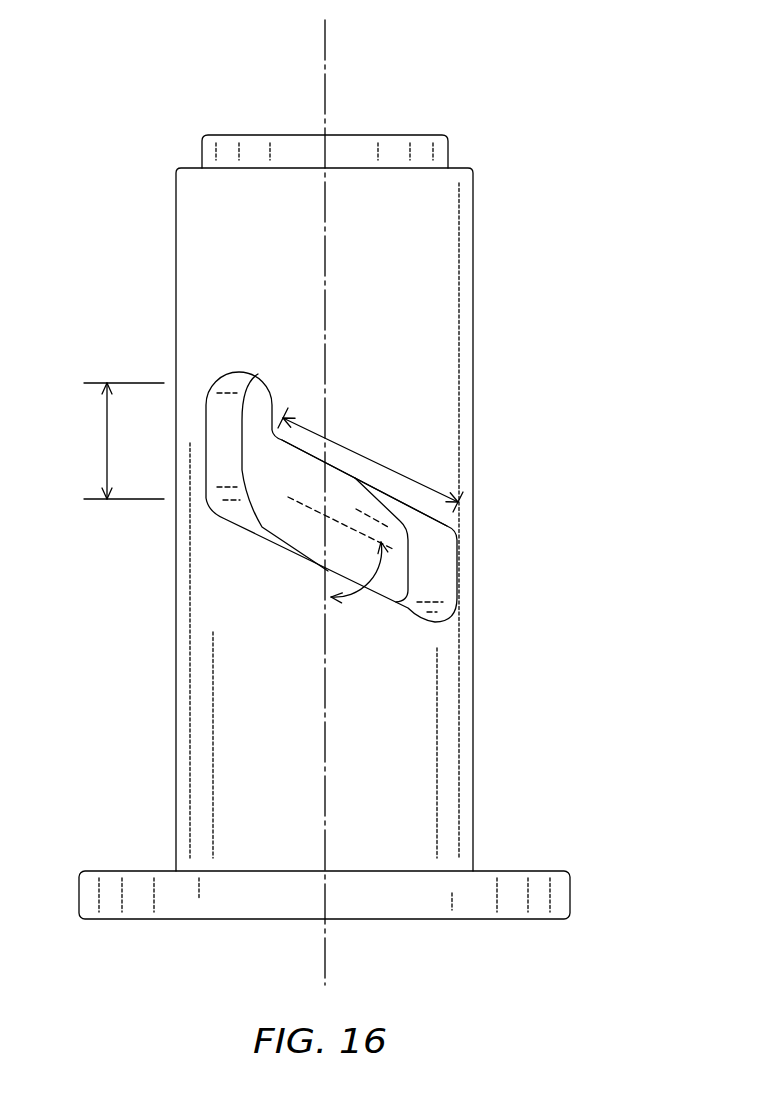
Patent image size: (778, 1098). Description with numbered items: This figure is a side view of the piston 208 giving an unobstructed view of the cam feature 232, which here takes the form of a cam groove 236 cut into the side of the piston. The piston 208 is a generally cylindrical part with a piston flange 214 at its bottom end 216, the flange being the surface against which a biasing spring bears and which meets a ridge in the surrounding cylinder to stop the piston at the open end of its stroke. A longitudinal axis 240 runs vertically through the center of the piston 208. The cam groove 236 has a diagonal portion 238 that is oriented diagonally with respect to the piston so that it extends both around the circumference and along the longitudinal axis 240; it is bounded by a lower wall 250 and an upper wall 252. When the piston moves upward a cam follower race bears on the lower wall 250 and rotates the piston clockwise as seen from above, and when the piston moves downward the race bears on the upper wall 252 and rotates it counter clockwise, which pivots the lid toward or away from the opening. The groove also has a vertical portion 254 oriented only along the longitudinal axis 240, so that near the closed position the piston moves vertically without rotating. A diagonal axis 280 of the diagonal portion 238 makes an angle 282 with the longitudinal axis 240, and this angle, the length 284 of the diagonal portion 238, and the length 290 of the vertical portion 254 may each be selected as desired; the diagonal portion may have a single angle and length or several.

The longitudinal axis 240 is at (326, 61).
The piston 208 is at (495, 212).
The piston flange 214 is at (386, 894).
The bottom end 216 is at (570, 892).
The lower wall 250 is at (295, 542).
The upper wall 252 is at (338, 466).
The vertical portion 254 is at (224, 428).
The cam feature 232 is at (504, 540).
The cam groove 236 is at (504, 540).
The diagonal portion 238 is at (445, 538).
The diagonal axis 280 is at (297, 508).
The angle 282 is at (372, 584).
The length 284 is at (370, 460).
The length 290 is at (107, 443).